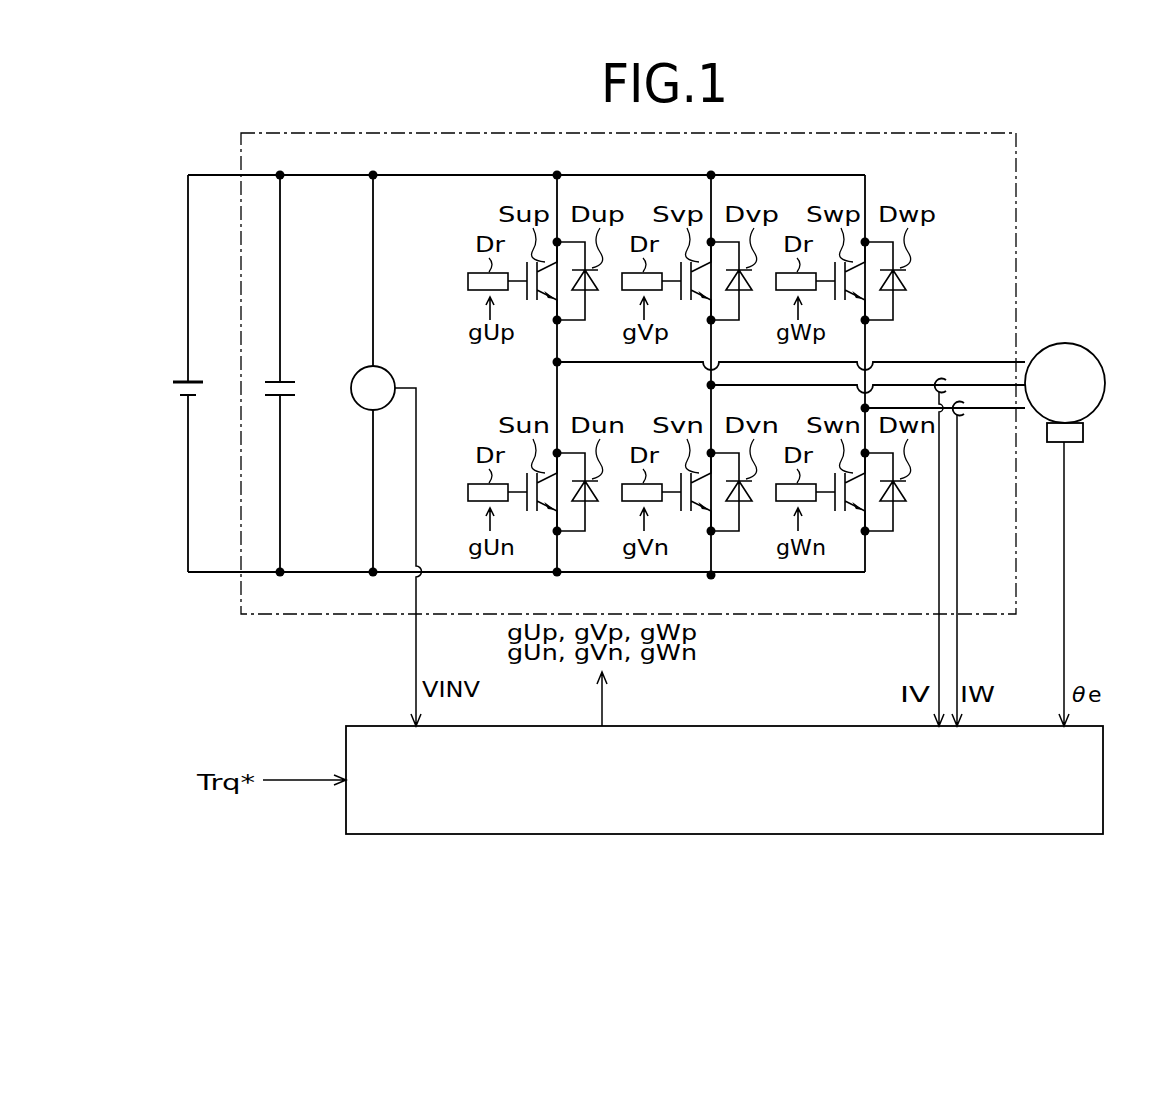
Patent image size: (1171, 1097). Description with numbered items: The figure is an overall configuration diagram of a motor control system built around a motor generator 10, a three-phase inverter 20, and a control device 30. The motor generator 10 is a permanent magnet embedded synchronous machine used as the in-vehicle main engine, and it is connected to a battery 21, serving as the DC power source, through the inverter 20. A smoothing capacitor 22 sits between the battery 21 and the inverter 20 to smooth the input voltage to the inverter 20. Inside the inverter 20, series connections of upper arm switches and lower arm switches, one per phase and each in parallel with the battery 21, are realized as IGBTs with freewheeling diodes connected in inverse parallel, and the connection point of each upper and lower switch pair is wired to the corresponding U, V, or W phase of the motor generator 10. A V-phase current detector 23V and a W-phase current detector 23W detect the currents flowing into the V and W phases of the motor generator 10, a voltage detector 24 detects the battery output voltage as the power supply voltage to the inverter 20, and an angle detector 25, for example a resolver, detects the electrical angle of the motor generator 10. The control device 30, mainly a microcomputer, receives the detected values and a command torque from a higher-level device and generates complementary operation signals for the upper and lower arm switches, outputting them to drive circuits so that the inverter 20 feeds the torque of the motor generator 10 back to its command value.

The motor generator 10 is at (1083, 352).
The three-phase inverter 20 is at (1016, 200).
The battery 21 is at (198, 382).
The smoothing capacitor 22 is at (290, 382).
The V-phase current detector 23V is at (940, 378).
The W-phase current detector 23W is at (962, 416).
The voltage detector 24 is at (390, 373).
The angle detector 25 is at (1083, 445).
The control device 30 is at (1103, 795).